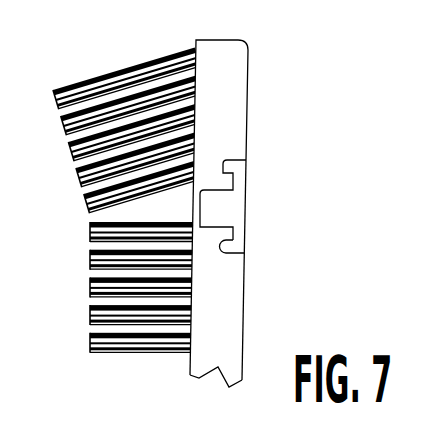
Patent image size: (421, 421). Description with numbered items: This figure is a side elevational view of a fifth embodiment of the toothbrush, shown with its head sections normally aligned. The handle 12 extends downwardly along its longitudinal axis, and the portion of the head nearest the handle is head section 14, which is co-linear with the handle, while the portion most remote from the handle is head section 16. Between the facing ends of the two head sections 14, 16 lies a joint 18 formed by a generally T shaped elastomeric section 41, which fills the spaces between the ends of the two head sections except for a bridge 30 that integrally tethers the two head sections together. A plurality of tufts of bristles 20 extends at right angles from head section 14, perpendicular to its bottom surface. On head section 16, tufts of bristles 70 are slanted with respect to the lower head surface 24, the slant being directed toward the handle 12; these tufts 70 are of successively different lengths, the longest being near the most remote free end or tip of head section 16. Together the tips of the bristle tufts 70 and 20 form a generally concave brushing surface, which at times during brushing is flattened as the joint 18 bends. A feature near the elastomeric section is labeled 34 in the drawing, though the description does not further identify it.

The handle 12 is at (203, 367).
The head section 14 is at (208, 330).
The head section 16 is at (208, 113).
The joint 18 is at (177, 214).
The tufts of bristles 20 is at (90, 282).
The lower head surface 24 is at (119, 114).
The bridge 30 is at (194, 204).
The notch 34 is at (232, 250).
The T shaped elastomeric section 41 is at (227, 212).
The tufts of bristles 70 is at (82, 82).